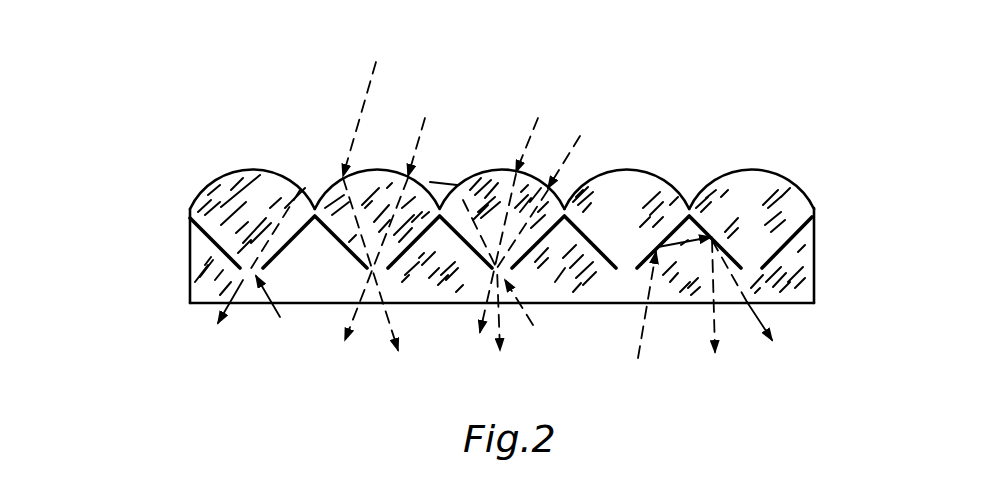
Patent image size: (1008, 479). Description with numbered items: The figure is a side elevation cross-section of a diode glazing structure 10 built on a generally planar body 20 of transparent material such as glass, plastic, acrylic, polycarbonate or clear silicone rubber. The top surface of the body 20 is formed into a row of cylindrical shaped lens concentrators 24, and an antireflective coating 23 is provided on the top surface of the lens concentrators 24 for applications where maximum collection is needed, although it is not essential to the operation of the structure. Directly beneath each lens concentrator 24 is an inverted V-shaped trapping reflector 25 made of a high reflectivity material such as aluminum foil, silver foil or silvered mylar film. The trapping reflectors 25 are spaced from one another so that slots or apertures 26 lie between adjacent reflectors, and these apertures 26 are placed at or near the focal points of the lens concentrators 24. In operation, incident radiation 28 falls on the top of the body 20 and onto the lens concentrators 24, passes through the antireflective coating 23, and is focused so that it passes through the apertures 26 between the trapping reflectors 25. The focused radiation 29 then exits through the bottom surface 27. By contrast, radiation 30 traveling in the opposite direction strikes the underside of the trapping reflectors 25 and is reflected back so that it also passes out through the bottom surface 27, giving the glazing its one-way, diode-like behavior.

The diode glazing structure 10 is at (145, 182).
The planar body 20 is at (226, 173).
The antireflective coating 23 is at (662, 181).
The lens concentrators 24 is at (270, 185).
The trapping reflector 25 is at (300, 238).
The apertures 26 is at (360, 273).
The bottom surface 27 is at (796, 304).
The incident radiation 28 is at (378, 64).
The focused radiation 29 is at (225, 322).
The radiation in the opposite direction 30 is at (710, 333).